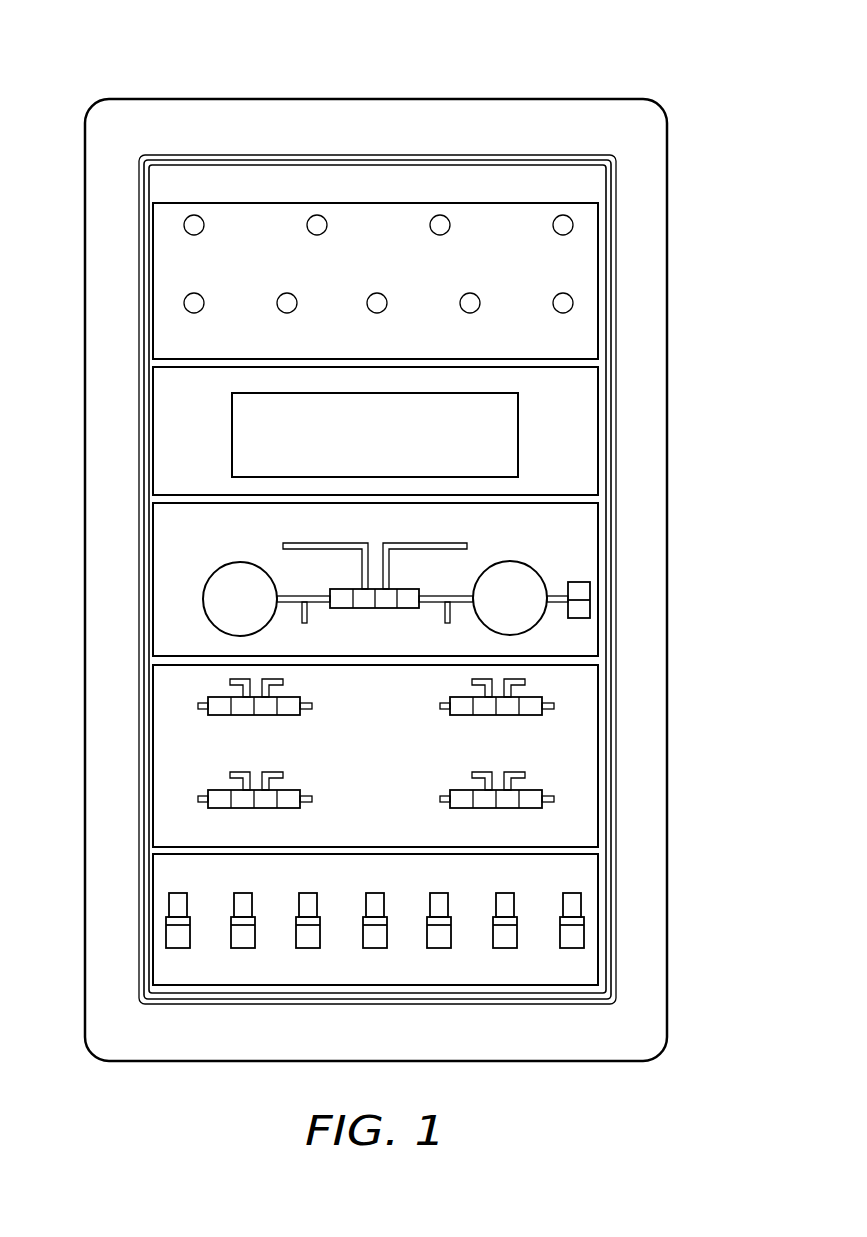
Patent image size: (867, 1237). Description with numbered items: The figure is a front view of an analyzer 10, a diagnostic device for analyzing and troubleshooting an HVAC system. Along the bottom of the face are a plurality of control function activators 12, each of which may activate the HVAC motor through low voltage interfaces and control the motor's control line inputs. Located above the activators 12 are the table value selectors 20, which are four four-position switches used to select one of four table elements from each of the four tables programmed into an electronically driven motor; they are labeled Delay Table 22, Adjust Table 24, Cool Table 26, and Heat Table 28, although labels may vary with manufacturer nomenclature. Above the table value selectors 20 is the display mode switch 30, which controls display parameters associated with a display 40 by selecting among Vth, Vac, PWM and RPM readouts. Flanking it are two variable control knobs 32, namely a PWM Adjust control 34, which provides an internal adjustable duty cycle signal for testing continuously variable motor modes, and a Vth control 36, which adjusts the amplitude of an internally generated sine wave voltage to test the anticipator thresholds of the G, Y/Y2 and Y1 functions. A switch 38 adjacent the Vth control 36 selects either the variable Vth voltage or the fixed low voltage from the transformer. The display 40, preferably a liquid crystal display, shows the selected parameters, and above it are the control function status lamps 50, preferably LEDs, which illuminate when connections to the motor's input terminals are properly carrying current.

The analyzer 10 is at (731, 94).
The control function activators 12 is at (190, 936).
The table value selectors 20 is at (170, 732).
The Delay Table 22 is at (207, 697).
The Adjust Table 24 is at (542, 697).
The Cool Table 26 is at (207, 790).
The Heat Table 28 is at (542, 790).
The display mode switch 30 is at (368, 609).
The variable control knobs 32 is at (180, 530).
The PWM Adjust control 34 is at (203, 597).
The Vth control 36 is at (533, 568).
The switch 38 is at (590, 605).
The display 40 is at (246, 443).
The control function status lamps 50 is at (381, 245).